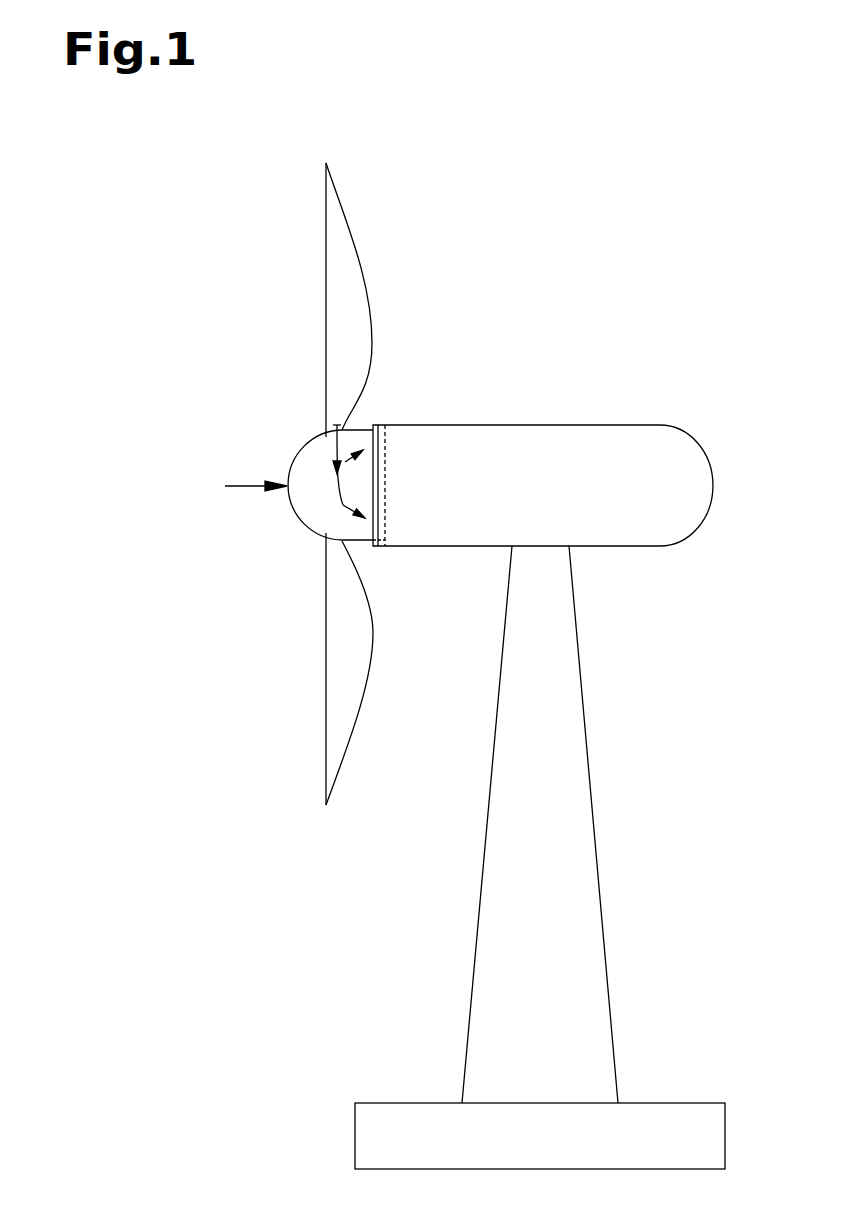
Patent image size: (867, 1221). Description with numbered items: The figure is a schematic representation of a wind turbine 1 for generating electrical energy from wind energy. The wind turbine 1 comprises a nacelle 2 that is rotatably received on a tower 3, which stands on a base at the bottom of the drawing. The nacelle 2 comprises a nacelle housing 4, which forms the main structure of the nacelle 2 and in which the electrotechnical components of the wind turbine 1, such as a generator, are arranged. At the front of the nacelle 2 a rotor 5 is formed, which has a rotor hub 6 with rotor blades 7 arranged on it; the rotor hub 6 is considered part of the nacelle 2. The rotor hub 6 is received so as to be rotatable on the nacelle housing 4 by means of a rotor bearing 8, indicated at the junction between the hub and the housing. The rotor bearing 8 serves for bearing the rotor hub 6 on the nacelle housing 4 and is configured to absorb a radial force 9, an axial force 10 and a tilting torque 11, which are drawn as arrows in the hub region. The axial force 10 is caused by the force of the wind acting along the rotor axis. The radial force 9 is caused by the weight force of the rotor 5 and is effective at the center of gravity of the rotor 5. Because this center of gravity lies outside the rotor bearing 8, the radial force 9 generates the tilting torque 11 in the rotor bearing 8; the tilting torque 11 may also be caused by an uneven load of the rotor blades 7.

The wind turbine 1 is at (628, 205).
The nacelle 2 is at (612, 340).
The tower 3 is at (567, 778).
The nacelle housing 4 is at (608, 447).
The rotor 5 is at (290, 448).
The rotor hub 6 is at (330, 528).
The rotor blades 7 is at (350, 313).
The rotor bearing 8 is at (383, 421).
The radial force 9 is at (336, 452).
The axial force 10 is at (255, 483).
The tilting torque 11 is at (343, 505).